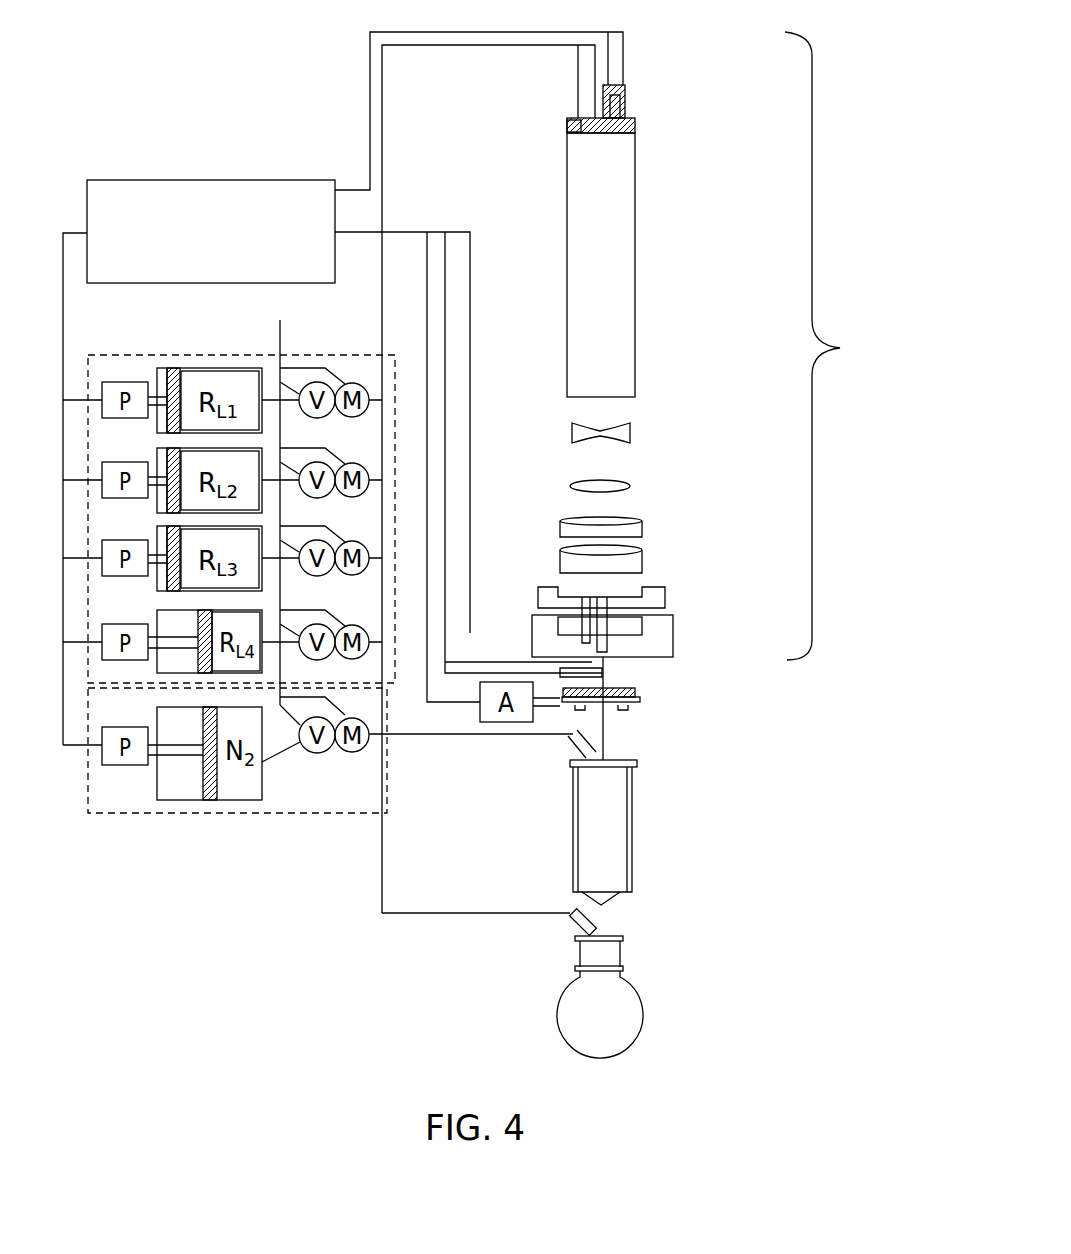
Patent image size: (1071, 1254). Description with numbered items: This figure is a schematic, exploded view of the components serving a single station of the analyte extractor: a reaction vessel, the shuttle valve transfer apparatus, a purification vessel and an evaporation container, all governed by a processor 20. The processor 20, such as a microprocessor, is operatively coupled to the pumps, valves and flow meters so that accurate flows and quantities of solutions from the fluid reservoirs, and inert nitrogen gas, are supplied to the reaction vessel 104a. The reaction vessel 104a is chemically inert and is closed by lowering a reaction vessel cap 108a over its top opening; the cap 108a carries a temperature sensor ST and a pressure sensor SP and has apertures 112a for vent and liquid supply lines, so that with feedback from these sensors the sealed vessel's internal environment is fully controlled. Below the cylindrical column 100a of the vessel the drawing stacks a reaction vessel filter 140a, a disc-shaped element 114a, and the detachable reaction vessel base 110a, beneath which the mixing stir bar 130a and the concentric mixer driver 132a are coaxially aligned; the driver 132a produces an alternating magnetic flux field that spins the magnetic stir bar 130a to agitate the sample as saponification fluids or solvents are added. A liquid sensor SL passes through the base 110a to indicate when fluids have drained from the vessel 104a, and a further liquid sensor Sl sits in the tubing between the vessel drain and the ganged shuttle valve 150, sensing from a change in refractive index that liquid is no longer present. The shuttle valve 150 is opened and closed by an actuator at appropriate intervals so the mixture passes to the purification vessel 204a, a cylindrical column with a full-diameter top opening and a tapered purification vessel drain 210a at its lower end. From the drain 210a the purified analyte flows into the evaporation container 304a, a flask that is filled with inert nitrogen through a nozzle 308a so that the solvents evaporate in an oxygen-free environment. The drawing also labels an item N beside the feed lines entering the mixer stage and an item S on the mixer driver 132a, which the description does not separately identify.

The processor 20 is at (136, 181).
The column 100a is at (637, 283).
The reaction vessel 104a is at (838, 346).
The reaction vessel cap 108a is at (646, 126).
The reaction vessel base 110a is at (632, 568).
The apertures 112a is at (572, 128).
The plate 114a is at (612, 523).
The mixing stir bar 130a is at (622, 433).
The mixer driver 132a is at (676, 627).
The reaction vessel filter 140a is at (616, 486).
The ganged shuttle valve 150 is at (632, 708).
The purification vessel 204a is at (620, 810).
The purification vessel drain 210a is at (615, 897).
The evaporation container 304a is at (600, 997).
The nozzle 308a is at (596, 928).
The temperature sensor ST is at (598, 102).
The pressure sensor SP is at (592, 113).
The liquid sensor SL is at (566, 600).
The liquid sensor Sl is at (603, 673).
The nozzle N is at (568, 628).
The sample S is at (640, 628).